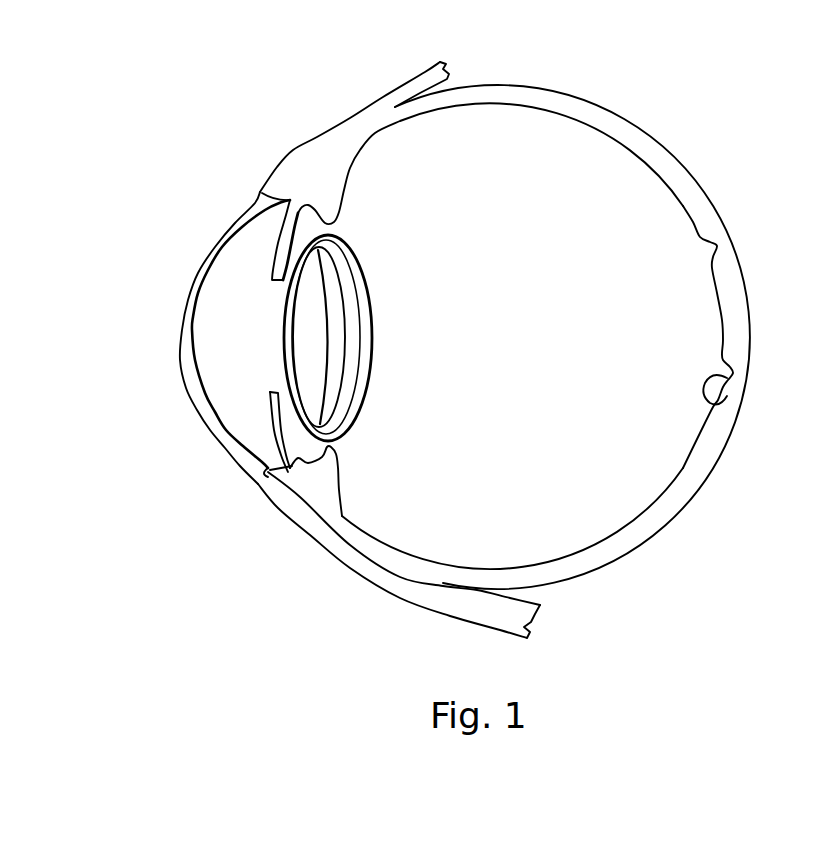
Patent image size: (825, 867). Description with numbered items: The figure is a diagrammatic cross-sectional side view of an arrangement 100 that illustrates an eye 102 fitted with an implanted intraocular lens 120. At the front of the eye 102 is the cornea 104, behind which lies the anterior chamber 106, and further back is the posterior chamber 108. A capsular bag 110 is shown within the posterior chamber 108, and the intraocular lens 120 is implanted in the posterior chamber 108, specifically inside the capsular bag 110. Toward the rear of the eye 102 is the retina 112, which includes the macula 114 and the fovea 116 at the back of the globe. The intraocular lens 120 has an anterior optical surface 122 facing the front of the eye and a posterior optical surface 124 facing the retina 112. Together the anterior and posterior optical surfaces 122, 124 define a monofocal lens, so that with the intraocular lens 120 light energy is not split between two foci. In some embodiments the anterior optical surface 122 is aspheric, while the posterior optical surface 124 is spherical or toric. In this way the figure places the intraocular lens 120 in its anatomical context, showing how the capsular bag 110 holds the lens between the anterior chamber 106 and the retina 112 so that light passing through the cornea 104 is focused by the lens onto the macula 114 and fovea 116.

The arrangement 100 is at (233, 129).
The eye 102 is at (306, 142).
The cornea 104 is at (200, 257).
The anterior chamber 106 is at (226, 386).
The posterior chamber 108 is at (366, 438).
The capsular bag 110 is at (367, 380).
The retina 112 is at (673, 481).
The macula 114 is at (721, 352).
The fovea 116 is at (714, 406).
The intraocular lens 120 is at (341, 300).
The anterior optical surface 122 is at (296, 288).
The posterior optical surface 124 is at (333, 330).